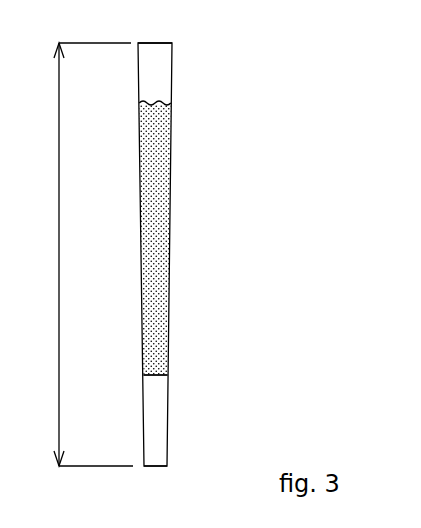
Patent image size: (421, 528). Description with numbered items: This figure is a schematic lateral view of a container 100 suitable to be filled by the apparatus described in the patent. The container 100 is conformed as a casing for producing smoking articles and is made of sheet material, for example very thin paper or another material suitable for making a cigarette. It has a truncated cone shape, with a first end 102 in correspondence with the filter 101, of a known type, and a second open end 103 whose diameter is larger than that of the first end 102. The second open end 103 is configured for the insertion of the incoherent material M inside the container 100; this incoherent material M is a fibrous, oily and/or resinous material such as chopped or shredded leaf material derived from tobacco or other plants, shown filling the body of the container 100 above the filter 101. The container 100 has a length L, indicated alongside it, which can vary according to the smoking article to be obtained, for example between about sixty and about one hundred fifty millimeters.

The length L is at (87, 254).
The container 100 is at (168, 266).
The incoherent material M is at (158, 204).
The filter 101 is at (158, 406).
The first end 102 is at (161, 466).
The second open end 103 is at (163, 44).